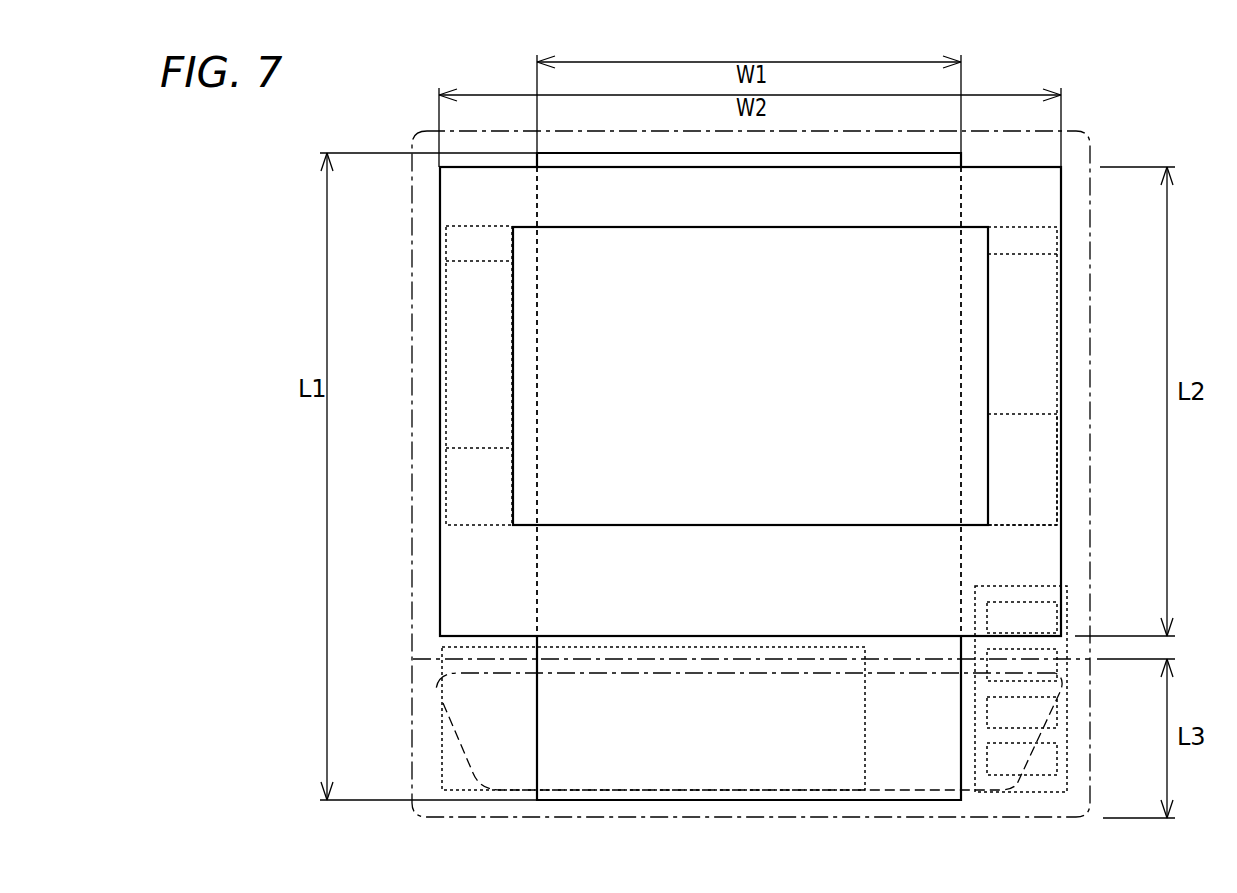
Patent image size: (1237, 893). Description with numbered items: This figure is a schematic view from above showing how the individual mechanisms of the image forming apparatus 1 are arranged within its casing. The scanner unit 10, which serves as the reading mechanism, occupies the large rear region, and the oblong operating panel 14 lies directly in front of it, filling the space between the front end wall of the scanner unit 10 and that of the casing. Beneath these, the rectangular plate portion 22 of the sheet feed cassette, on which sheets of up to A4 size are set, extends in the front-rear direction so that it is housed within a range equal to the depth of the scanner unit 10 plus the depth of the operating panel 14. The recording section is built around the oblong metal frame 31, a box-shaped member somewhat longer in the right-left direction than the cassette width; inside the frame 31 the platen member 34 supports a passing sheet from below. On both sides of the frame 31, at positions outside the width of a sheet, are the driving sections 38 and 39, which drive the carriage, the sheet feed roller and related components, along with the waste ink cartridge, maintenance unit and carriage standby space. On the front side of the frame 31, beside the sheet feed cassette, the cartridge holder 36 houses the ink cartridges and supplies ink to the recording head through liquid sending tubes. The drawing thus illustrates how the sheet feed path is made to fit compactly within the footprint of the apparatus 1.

The image forming apparatus 1 is at (1102, 108).
The scanner unit 10 is at (439, 208).
The operating panel 14 is at (437, 697).
The plate portion 22 is at (922, 153).
The frame 31 is at (1020, 226).
The platen member 34 is at (988, 458).
The cartridge holder 36 is at (1068, 590).
The driving section 38 is at (456, 426).
The driving section 39 is at (1060, 316).